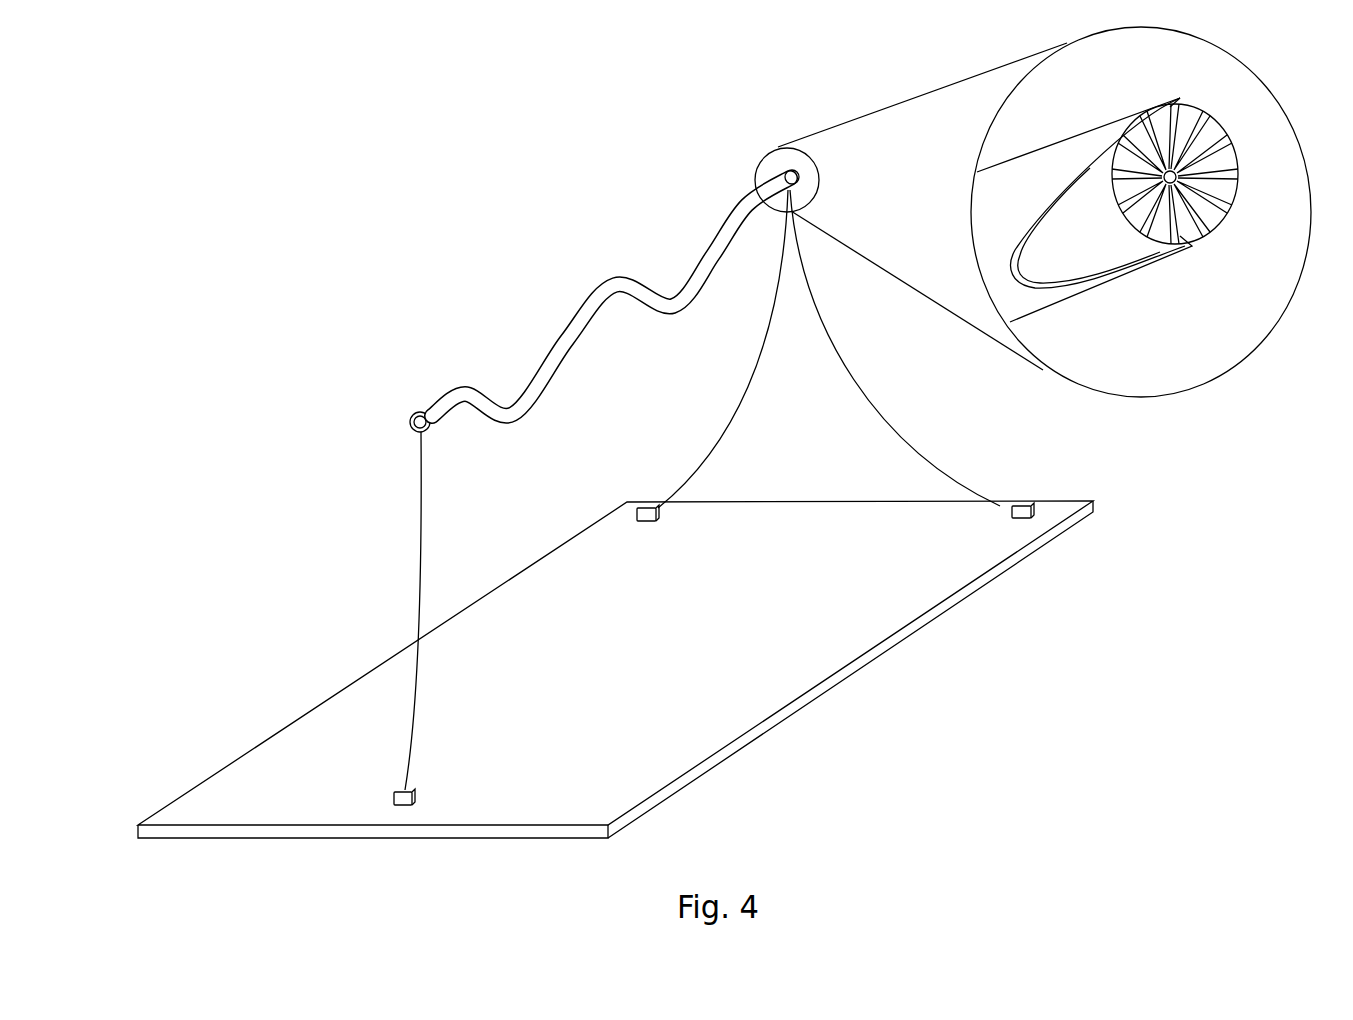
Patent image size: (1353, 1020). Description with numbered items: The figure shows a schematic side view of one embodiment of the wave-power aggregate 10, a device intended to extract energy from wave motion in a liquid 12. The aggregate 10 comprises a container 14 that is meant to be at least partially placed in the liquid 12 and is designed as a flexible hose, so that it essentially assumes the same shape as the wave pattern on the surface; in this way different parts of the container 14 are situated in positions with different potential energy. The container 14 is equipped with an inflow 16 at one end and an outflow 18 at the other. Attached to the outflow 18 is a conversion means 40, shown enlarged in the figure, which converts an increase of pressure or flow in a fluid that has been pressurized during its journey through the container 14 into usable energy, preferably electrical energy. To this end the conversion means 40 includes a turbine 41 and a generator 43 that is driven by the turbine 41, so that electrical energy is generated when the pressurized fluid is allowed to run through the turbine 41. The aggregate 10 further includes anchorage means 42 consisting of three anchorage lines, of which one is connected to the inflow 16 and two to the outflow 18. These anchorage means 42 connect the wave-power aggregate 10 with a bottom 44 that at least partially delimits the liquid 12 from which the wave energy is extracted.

The wave-power aggregate 10 is at (568, 242).
The liquid 12 is at (412, 440).
The container 14 is at (730, 218).
The inflow 16 is at (417, 411).
The outflow 18 is at (787, 170).
The conversion means 40 is at (1157, 88).
The turbine 41 is at (1232, 213).
The anchorage means 42 is at (947, 482).
The generator 43 is at (1185, 172).
The bottom 44 is at (698, 622).